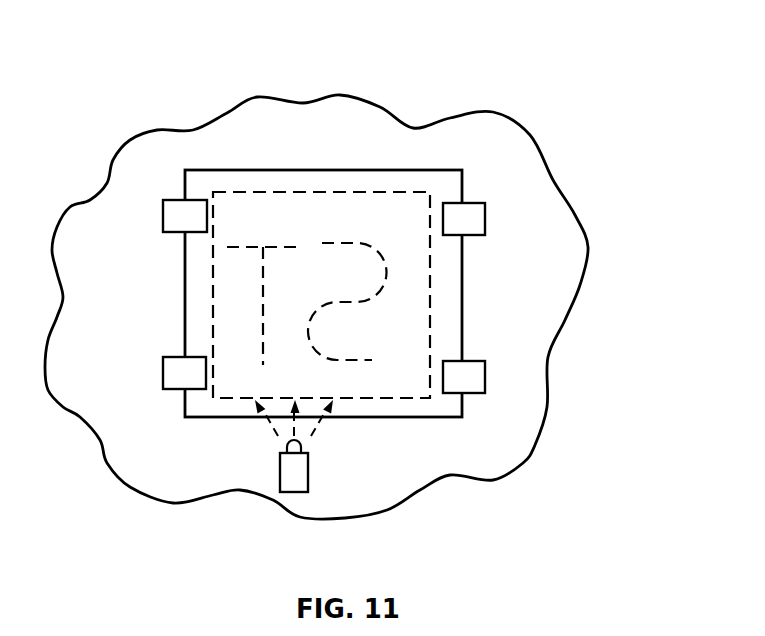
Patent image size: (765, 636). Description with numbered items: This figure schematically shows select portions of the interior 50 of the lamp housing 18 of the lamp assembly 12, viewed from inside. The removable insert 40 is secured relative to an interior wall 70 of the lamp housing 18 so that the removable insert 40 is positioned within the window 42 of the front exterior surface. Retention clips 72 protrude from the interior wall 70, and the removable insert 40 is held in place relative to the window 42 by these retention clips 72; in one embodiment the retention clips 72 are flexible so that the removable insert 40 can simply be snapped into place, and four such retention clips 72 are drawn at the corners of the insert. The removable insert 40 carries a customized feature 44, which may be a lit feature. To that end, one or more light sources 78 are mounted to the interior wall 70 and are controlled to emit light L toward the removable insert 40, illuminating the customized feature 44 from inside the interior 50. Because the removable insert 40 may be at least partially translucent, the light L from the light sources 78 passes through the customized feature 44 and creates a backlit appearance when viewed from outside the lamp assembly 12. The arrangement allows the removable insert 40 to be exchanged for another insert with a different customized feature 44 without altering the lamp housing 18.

The lamp assembly 12 is at (578, 49).
The lamp housing 18 is at (418, 130).
The removable insert 40 is at (462, 253).
The window 42 is at (432, 275).
The customized feature 44 is at (268, 238).
The interior 50 is at (504, 158).
The interior wall 70 is at (115, 438).
The retention clips 72 is at (175, 217).
The light sources 78 is at (300, 478).
The light L is at (322, 443).